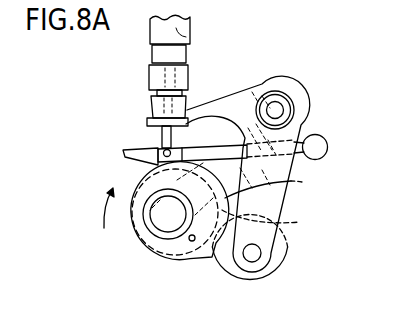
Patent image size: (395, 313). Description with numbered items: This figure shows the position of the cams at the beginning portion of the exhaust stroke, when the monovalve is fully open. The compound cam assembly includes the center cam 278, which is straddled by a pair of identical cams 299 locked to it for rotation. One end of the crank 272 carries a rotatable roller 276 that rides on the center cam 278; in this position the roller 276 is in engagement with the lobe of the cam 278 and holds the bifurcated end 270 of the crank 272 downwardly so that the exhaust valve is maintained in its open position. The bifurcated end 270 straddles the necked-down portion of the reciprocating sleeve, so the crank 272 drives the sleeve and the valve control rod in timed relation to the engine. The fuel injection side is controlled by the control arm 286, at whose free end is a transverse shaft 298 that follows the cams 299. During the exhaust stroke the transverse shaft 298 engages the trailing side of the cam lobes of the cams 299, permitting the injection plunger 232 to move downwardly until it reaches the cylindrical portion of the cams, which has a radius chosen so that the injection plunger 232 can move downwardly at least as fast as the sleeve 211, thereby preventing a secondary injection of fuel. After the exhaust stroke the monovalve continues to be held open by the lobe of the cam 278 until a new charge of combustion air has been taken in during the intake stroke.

The sleeve 211 is at (176, 36).
The injection plunger 232 is at (156, 133).
The bifurcated end of the crank 270 is at (186, 111).
The crank 272 is at (267, 202).
The rotatable roller 276 is at (279, 257).
The center cam 278 is at (284, 217).
The control arm 286 is at (199, 150).
The transverse shaft 298 is at (150, 147).
The cams 299 is at (287, 185).